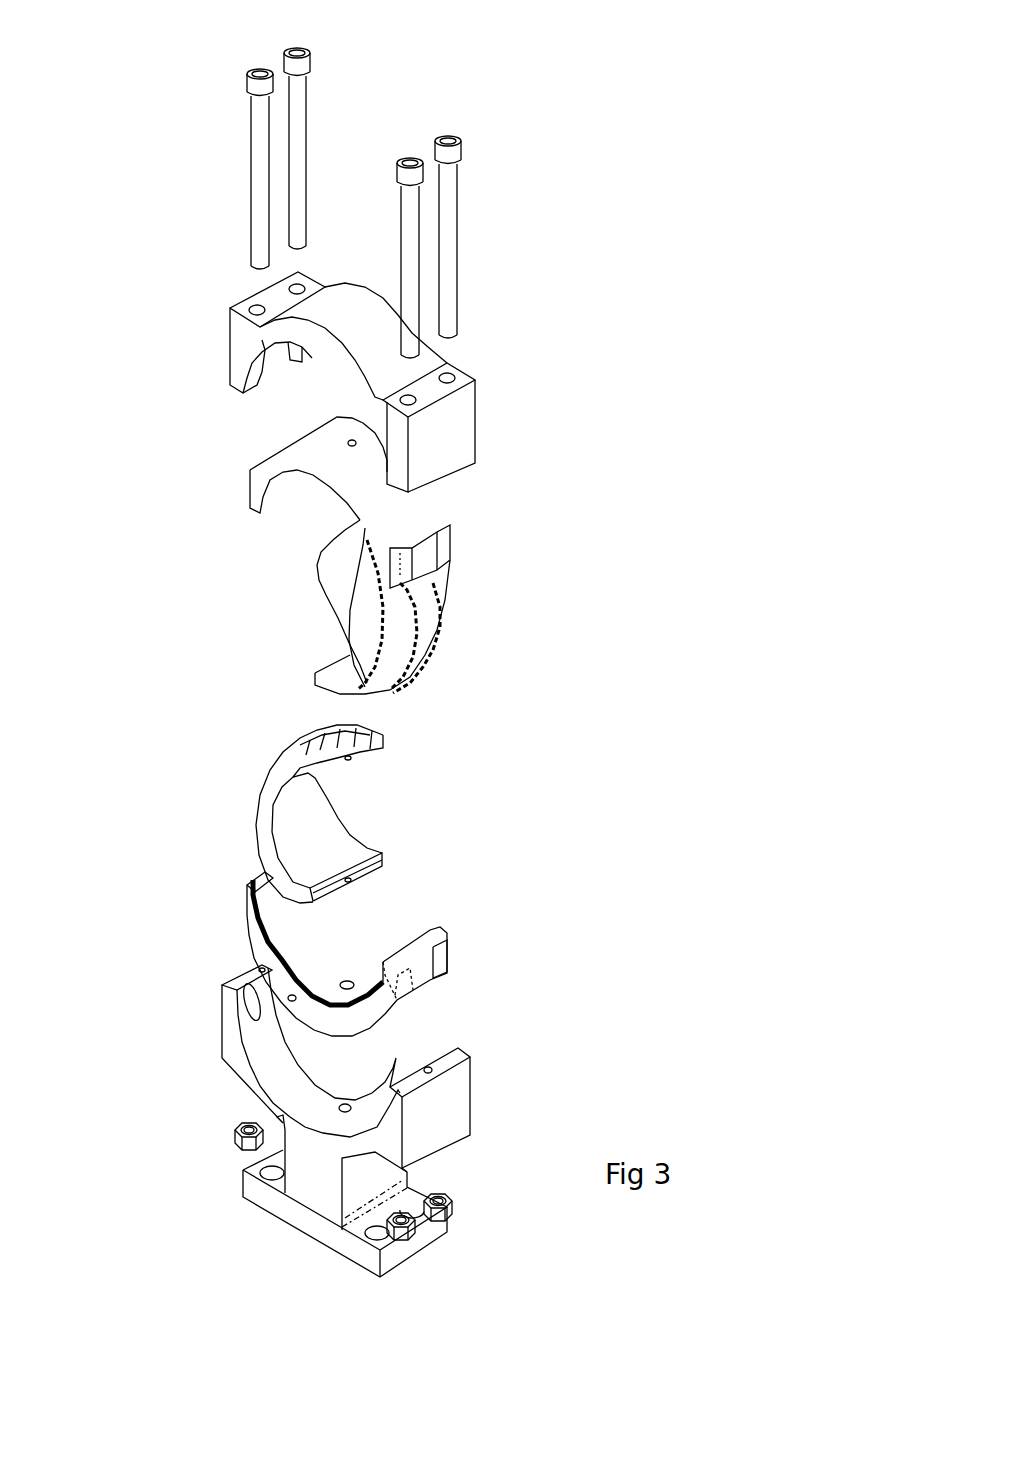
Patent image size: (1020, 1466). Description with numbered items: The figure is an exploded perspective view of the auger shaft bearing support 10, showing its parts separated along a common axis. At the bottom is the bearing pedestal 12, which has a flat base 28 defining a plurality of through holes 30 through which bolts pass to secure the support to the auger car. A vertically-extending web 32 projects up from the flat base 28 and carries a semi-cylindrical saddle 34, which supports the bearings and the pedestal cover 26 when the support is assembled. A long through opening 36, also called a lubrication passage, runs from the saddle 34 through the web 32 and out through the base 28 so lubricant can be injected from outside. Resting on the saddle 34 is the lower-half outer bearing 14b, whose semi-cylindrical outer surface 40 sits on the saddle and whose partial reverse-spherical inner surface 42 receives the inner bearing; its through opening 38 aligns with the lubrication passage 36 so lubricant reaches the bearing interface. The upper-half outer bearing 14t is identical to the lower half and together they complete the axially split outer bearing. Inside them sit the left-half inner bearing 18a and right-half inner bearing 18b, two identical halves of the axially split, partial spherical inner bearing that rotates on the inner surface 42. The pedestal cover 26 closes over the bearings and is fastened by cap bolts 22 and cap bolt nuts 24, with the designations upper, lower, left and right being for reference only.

The auger shaft bearing support 10 is at (580, 283).
The bearing pedestal 12 is at (512, 1083).
The upper-half outer bearing 14t is at (452, 520).
The lower-half outer bearing 14b is at (452, 940).
The left-half inner bearing 18a is at (370, 750).
The right-half inner bearing 18b is at (448, 612).
The cap bolts 22 is at (272, 84).
The cap bolt nuts 24 is at (237, 1140).
The pedestal cover 26 is at (478, 418).
The flat base 28 is at (362, 1260).
The through holes 30 is at (382, 1242).
The web 32 is at (305, 1192).
The semi-cylindrical saddle 34 is at (288, 1053).
The through opening (lubrication passage) 36 is at (344, 1112).
The through opening 38 is at (355, 983).
The semi-cylindrical outer surface 40 is at (413, 995).
The partial reverse-spherical inner surface 42 is at (302, 940).